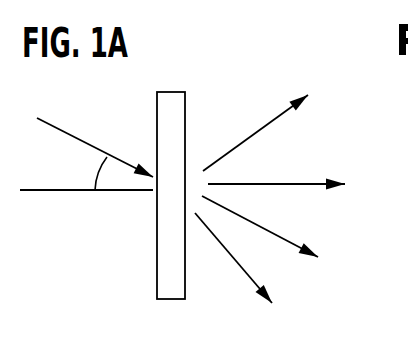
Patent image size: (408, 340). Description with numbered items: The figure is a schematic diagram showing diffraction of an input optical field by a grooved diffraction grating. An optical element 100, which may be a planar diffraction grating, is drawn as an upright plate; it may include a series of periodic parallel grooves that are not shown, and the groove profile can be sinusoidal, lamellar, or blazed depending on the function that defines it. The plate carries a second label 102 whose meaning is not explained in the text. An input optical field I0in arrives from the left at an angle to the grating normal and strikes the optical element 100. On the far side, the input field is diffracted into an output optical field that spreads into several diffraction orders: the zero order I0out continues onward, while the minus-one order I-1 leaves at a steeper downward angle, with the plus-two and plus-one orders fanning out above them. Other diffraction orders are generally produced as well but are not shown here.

The optical element 100 is at (162, 192).
The grating substrate / plate 102 is at (218, 171).
The input optical field I0in is at (95, 135).
The 0 diffraction order I0out is at (299, 239).
The −1 diffraction order I-1 is at (251, 272).